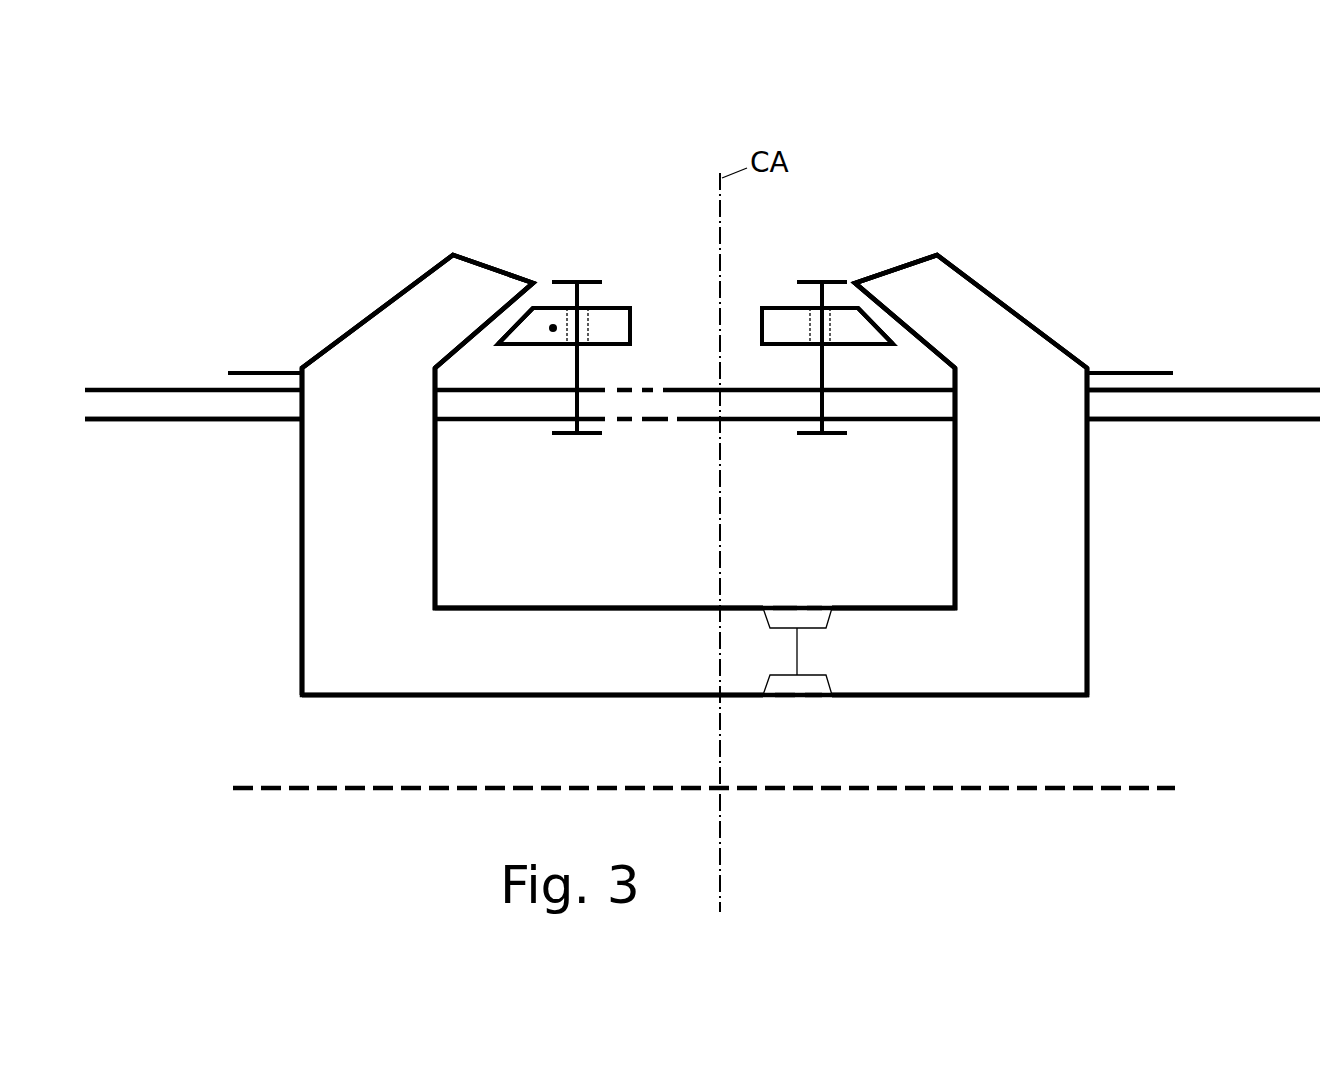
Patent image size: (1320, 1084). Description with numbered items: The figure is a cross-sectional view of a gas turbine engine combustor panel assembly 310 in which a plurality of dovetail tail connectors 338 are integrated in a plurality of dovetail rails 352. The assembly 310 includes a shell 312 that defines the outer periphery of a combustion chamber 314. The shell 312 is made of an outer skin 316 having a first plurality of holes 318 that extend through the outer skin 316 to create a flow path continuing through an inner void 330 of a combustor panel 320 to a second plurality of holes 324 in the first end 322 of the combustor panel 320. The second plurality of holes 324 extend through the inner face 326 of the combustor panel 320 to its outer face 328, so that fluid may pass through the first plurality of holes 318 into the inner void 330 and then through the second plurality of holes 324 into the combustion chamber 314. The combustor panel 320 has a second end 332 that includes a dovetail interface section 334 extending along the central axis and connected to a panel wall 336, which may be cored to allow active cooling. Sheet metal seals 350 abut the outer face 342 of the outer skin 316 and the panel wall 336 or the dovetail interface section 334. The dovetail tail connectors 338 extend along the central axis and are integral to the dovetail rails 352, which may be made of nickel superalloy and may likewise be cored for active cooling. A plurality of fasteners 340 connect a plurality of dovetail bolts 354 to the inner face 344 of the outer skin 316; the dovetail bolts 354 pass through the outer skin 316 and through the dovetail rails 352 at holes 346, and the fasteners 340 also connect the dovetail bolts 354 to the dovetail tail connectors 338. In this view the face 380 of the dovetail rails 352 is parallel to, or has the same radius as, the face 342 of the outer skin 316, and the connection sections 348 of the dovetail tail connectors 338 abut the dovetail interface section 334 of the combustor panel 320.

The gas turbine engine combustor panel assembly 310 is at (157, 176).
The shell 312 is at (1137, 453).
The combustion chamber 314 is at (1140, 783).
The outer skin 316 is at (190, 370).
The first plurality of holes 318 is at (607, 428).
The combustor panel 320 is at (285, 540).
The first end 322 is at (285, 682).
The second plurality of holes 324 is at (797, 651).
The inner face 326 is at (900, 604).
The outer face 328 is at (984, 699).
The inner void 330 is at (570, 535).
The second end 332 is at (382, 277).
The dovetail interface section 334 is at (980, 290).
The panel wall 336 is at (1090, 566).
The dovetail tail connectors 338 is at (548, 337).
The fasteners 340 is at (587, 278).
The outer face of outer skin 342 is at (1265, 388).
The inner face of outer skin 344 is at (140, 421).
The holes 346 is at (805, 327).
The connection sections 348 is at (522, 318).
The sheet metal seals 350 is at (260, 372).
The dovetail rails 352 is at (628, 304).
The dovetail bolts 354 is at (820, 367).
The face 380 is at (853, 348).